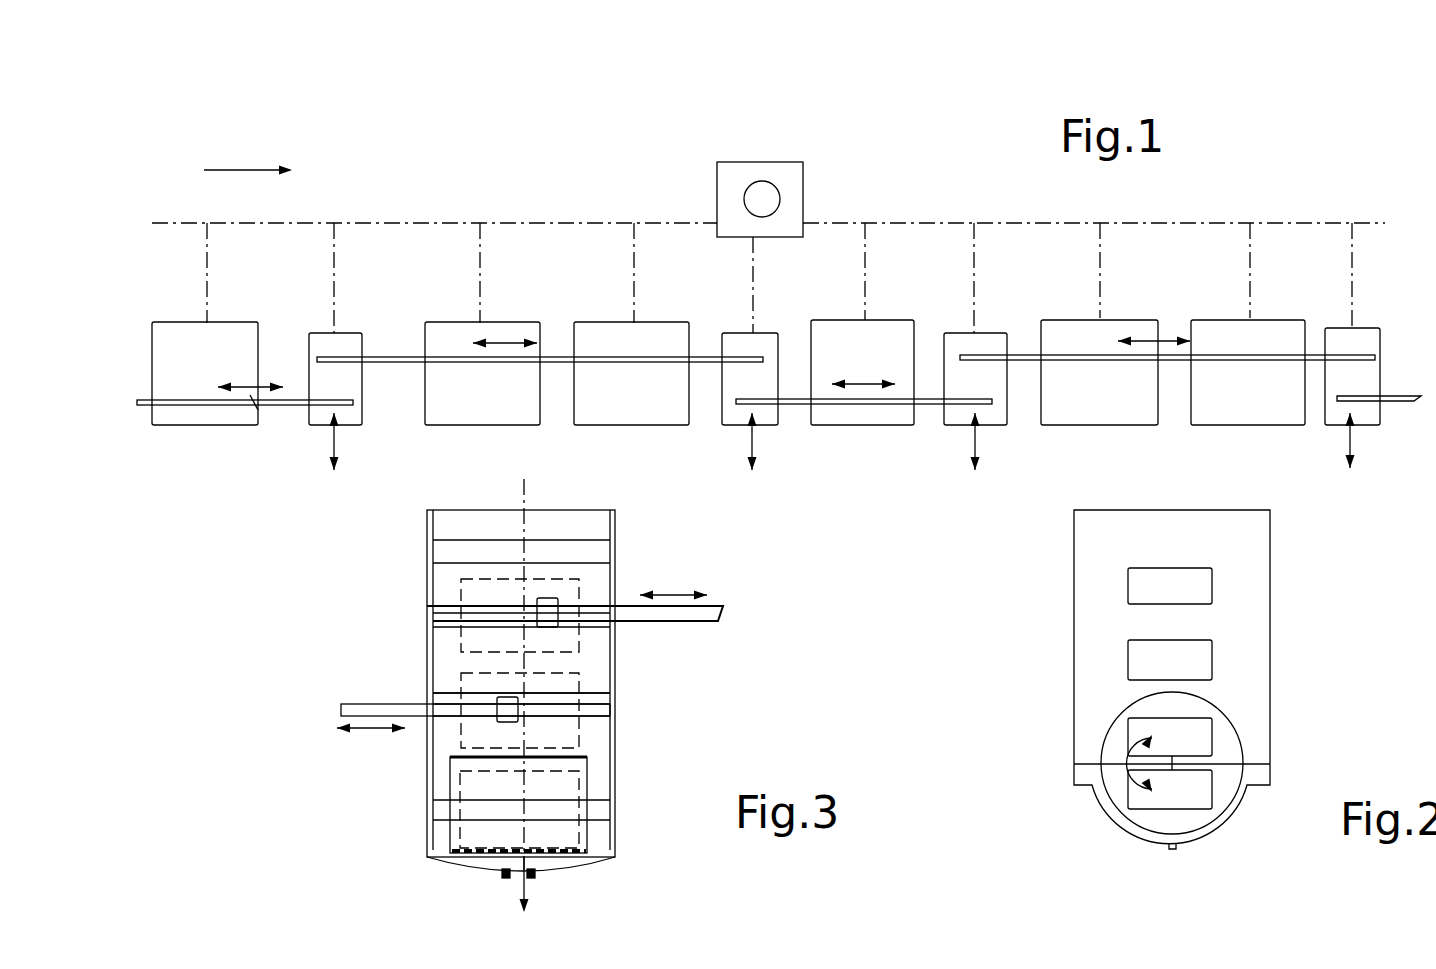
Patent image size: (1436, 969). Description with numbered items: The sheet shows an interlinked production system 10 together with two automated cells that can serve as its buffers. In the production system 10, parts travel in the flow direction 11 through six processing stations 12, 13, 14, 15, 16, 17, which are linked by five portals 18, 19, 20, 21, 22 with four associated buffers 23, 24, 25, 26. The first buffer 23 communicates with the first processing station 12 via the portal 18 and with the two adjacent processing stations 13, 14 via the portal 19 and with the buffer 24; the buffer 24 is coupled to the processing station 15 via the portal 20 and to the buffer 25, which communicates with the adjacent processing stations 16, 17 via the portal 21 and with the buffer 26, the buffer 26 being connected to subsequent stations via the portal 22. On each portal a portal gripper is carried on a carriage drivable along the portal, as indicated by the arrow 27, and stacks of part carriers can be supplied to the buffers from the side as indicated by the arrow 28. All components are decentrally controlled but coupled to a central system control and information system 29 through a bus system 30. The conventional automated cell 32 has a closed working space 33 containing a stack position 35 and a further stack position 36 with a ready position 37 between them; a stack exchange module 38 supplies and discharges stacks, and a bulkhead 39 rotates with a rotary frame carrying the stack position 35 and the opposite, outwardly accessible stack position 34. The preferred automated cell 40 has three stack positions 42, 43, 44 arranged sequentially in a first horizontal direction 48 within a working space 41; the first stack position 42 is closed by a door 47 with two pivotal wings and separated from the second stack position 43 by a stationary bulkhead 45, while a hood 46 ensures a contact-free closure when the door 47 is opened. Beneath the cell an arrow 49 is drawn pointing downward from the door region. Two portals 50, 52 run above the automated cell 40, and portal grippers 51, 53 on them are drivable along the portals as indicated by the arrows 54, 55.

In FIG. 1, the interlinked production system 10 is at (473, 160).
In FIG. 1, the flow direction 11 is at (238, 170).
In FIG. 1, the first processing station 12 is at (237, 335).
In FIG. 1, the processing station 13 is at (445, 335).
In FIG. 1, the processing station 14 is at (646, 337).
In FIG. 1, the processing station 15 is at (887, 330).
In FIG. 1, the processing station 16 is at (1113, 335).
In FIG. 1, the processing station 17 is at (1257, 332).
In FIG. 1, the portal 18 is at (188, 403).
In FIG. 1, the portal 19 is at (390, 357).
In FIG. 1, the portal 20 is at (795, 404).
In FIG. 1, the portal 21 is at (1019, 356).
In FIG. 1, the portal 22 is at (1400, 402).
In FIG. 1, the first buffer 23 is at (342, 343).
In FIG. 1, the buffer 24 is at (763, 340).
In FIG. 1, the buffer 25 is at (973, 343).
In FIG. 1, the buffer 26 is at (1355, 343).
In FIG. 1, the arrow 27 is at (252, 387).
In FIG. 1, the arrow 28 is at (333, 440).
In FIG. 1, the central system control and information system 29 is at (780, 172).
In FIG. 1, the bus system 30 is at (570, 221).
In FIG. 2, the automated cell 32 is at (1278, 586).
In FIG. 2, the closed working space 33 is at (1253, 630).
In FIG. 2, the stack position 34 is at (1193, 793).
In FIG. 2, the stack position 35 is at (1193, 735).
In FIG. 2, the further stack position 36 is at (1145, 592).
In FIG. 2, the ready position 37 is at (1142, 657).
In FIG. 2, the stack exchange module 38 is at (1225, 783).
In FIG. 2, the bulkhead 39 is at (1222, 763).
In FIG. 3, the automated cell 40 is at (630, 565).
In FIG. 3, the working space 41 is at (613, 660).
In FIG. 3, the first stack position 42 is at (563, 782).
In FIG. 3, the second stack position 43 is at (563, 730).
In FIG. 3, the third stack position 44 is at (473, 590).
In FIG. 3, the stationary bulkhead 45 is at (478, 748).
In FIG. 3, the hood 46 is at (452, 782).
In FIG. 3, the door 47 is at (567, 860).
In FIG. 3, the first horizontal direction 48 is at (524, 490).
In FIG. 3, the vertical movement 49 is at (525, 885).
In FIG. 3, the portal 50 is at (700, 613).
In FIG. 3, the portal gripper 51 is at (548, 603).
In FIG. 3, the portal 52 is at (600, 699).
In FIG. 3, the portal gripper 53 is at (500, 697).
In FIG. 3, the arrow 54 is at (677, 593).
In FIG. 3, the arrow 55 is at (370, 728).